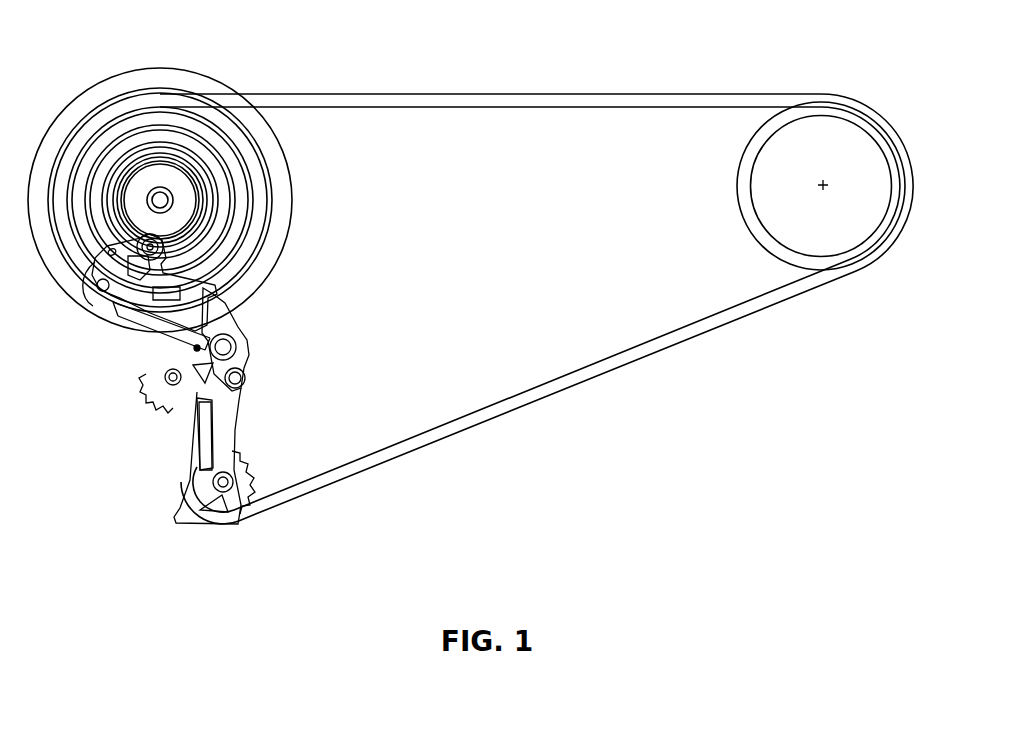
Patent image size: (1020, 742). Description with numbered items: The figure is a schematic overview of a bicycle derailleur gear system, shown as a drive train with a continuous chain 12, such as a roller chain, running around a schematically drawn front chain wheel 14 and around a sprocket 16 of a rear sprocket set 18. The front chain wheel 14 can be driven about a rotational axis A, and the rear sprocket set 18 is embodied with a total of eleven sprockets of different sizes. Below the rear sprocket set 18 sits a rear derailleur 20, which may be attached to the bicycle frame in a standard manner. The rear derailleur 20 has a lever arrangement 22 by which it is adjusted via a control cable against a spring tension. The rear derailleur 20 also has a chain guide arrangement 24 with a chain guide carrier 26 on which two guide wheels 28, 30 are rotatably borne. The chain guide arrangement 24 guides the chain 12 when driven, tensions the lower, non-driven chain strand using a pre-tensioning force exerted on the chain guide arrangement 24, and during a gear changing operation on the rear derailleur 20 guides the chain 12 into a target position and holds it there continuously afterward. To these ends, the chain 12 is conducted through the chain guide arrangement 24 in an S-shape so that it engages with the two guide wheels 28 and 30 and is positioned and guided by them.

The continuous chain 12 is at (420, 93).
The front chain wheel 14 is at (777, 120).
The sprocket 16 is at (213, 107).
The rear sprocket set 18 is at (150, 67).
The rear derailleur 20 is at (146, 328).
The lever arrangement 22 is at (122, 305).
The chain guide arrangement 24 is at (206, 442).
The chain guide carrier 26 is at (236, 428).
The guide wheel 28 is at (152, 396).
The guide wheel 30 is at (265, 488).